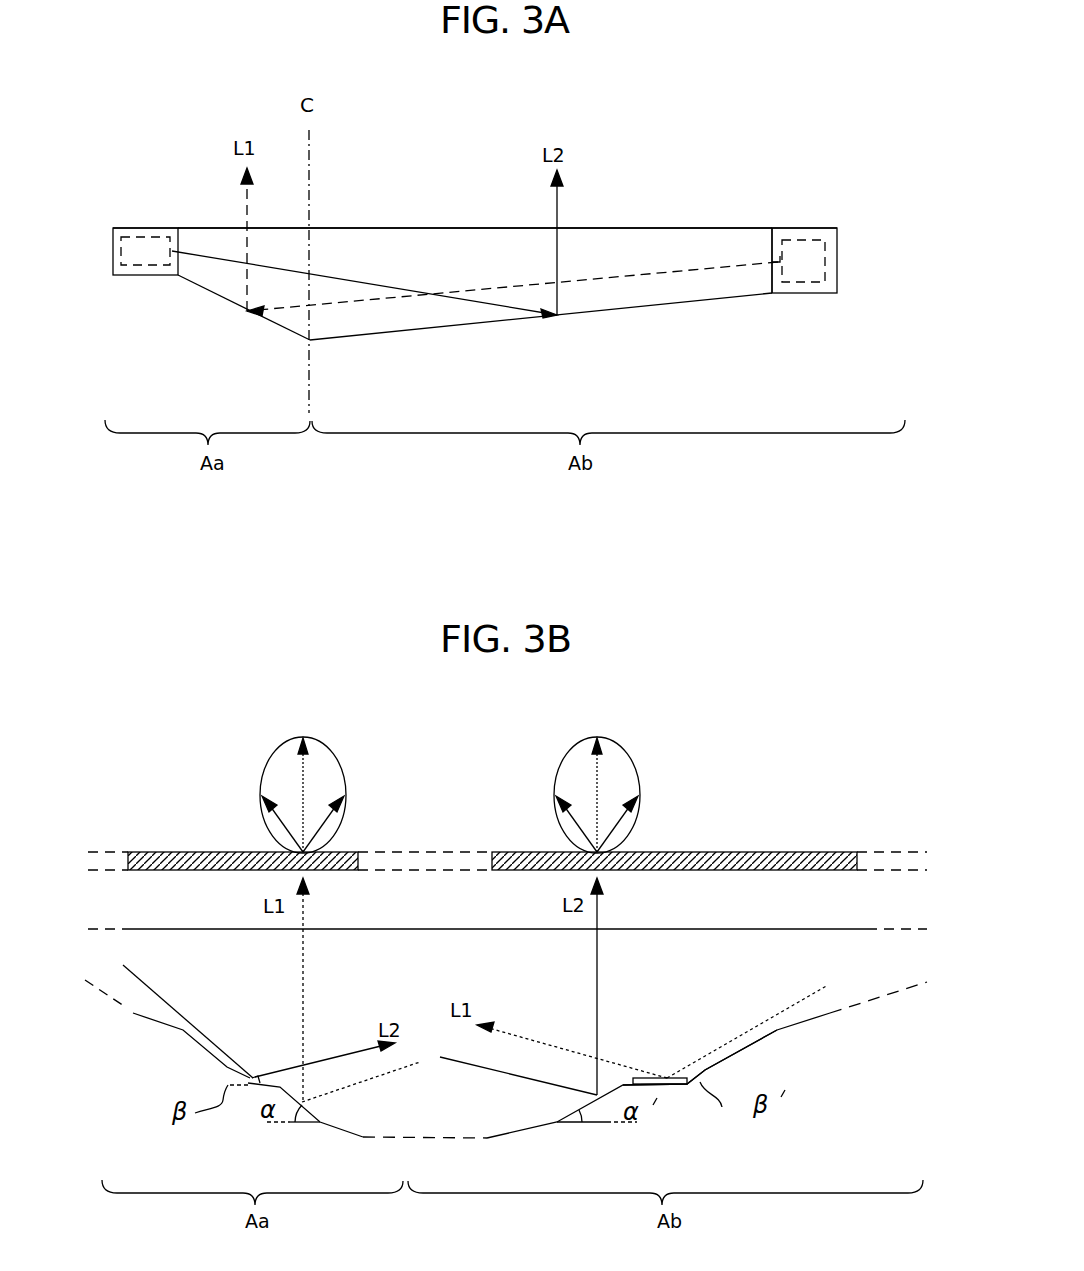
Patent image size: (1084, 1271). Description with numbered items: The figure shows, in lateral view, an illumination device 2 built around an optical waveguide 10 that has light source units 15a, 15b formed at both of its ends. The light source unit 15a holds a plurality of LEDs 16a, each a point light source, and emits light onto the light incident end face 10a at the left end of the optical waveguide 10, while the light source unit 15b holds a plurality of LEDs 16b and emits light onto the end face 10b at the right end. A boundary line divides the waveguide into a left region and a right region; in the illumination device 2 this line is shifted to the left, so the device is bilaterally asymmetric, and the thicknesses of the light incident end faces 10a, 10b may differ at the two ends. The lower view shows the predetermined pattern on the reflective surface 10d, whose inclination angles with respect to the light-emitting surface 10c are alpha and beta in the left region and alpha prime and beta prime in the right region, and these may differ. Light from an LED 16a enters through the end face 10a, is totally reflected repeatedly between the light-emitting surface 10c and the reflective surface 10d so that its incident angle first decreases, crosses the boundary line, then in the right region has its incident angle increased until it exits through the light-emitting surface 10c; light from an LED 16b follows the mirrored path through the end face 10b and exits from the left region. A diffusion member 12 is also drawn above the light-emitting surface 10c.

In FIG. 3A, the illumination device 2 is at (418, 83).
In FIG. 3A, the optical waveguide 10 is at (400, 252).
In FIG. 3B, the optical waveguide 10 is at (830, 1015).
In FIG. 3A, the light incident end face 10a is at (180, 268).
In FIG. 3A, the light incident end face 10b is at (773, 248).
In FIG. 3A, the light-emitting surface 10c is at (692, 228).
In FIG. 3B, the light-emitting surface 10c is at (805, 929).
In FIG. 3A, the reflective surface 10d is at (678, 303).
In FIG. 3B, the reflective surface 10d is at (777, 1032).
In FIG. 3B, the diffusion plate 12 is at (713, 852).
In FIG. 3A, the light source unit 15a is at (157, 227).
In FIG. 3A, the light source unit 15b is at (813, 228).
In FIG. 3A, the LED 16a is at (142, 267).
In FIG. 3A, the LED 16b is at (800, 282).